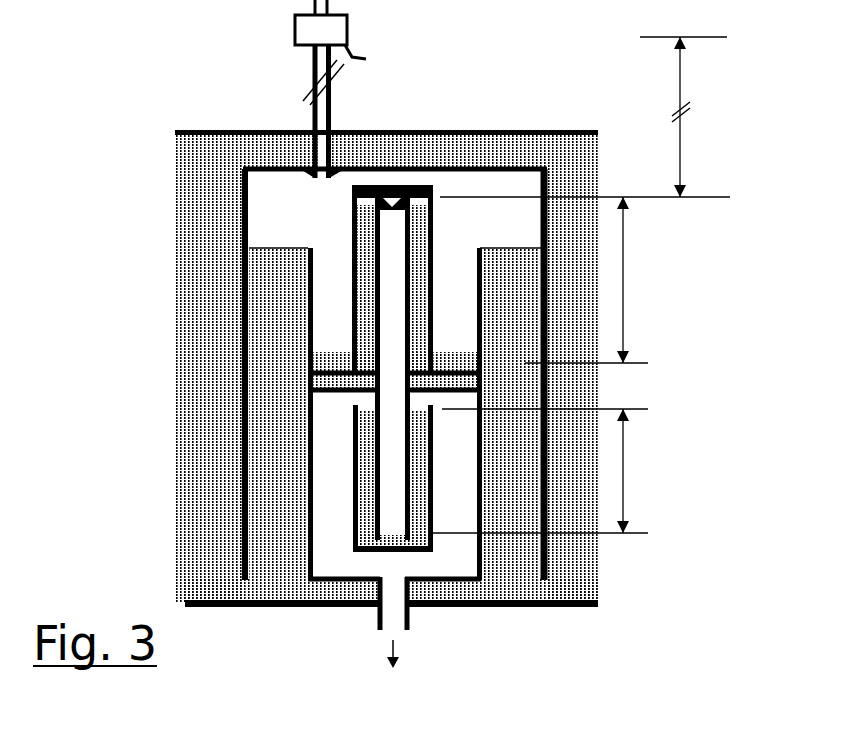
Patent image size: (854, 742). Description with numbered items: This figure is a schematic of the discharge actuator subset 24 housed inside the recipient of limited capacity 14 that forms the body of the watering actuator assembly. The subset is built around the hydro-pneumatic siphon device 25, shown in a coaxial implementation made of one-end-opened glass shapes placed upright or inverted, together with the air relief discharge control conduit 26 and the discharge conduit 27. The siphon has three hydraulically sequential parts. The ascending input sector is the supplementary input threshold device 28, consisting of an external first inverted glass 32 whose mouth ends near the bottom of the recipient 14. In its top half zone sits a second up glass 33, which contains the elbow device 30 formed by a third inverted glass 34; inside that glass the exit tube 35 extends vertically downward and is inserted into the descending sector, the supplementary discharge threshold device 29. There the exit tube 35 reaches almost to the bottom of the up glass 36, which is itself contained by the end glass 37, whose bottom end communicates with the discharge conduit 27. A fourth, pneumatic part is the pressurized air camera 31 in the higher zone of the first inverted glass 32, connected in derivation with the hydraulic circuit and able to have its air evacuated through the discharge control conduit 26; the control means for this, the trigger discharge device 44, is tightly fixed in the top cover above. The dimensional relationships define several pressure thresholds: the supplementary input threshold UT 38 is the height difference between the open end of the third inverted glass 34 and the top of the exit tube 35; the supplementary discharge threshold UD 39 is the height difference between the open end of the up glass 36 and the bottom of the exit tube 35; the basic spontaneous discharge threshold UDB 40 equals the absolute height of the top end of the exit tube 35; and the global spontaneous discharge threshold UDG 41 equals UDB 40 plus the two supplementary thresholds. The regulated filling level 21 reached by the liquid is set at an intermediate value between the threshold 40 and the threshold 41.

The recipient of limited capacity 14 is at (550, 607).
The regulated filling level 21 is at (394, 110).
The discharge actuator subset 24 is at (105, 53).
The hydro-pneumatic siphon device 25 is at (357, 368).
The air relief discharge control conduit 26 is at (335, 111).
The discharge conduit 27 is at (373, 622).
The supplementary input threshold device 28 is at (241, 186).
The supplementary discharge threshold device 29 is at (306, 474).
The elbow device 30 is at (348, 222).
The pressurized air camera 31 is at (368, 281).
The first inverted glass 32 is at (249, 561).
The second up glass 33 is at (478, 277).
The third inverted glass 34 is at (434, 237).
The exit tube 35 is at (371, 294).
The up glass 36 is at (433, 481).
The end glass 37 is at (312, 460).
The supplementary input threshold UT 38 is at (624, 200).
The supplementary discharge threshold UD 39 is at (603, 308).
The basic spontaneous discharge threshold UDB 40 is at (619, 176).
The global spontaneous discharge threshold UDG 41 is at (716, 18).
The trigger discharge device 44 is at (312, 29).